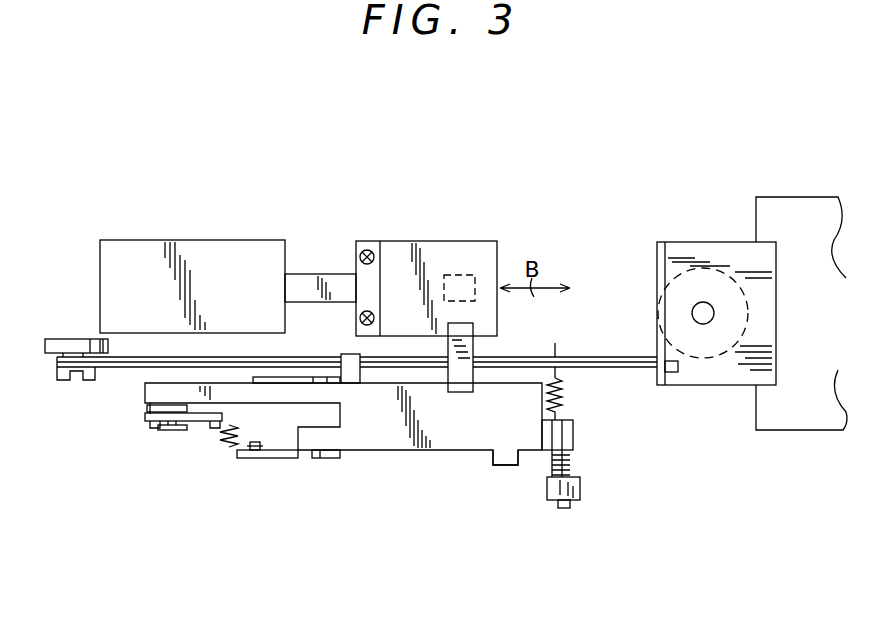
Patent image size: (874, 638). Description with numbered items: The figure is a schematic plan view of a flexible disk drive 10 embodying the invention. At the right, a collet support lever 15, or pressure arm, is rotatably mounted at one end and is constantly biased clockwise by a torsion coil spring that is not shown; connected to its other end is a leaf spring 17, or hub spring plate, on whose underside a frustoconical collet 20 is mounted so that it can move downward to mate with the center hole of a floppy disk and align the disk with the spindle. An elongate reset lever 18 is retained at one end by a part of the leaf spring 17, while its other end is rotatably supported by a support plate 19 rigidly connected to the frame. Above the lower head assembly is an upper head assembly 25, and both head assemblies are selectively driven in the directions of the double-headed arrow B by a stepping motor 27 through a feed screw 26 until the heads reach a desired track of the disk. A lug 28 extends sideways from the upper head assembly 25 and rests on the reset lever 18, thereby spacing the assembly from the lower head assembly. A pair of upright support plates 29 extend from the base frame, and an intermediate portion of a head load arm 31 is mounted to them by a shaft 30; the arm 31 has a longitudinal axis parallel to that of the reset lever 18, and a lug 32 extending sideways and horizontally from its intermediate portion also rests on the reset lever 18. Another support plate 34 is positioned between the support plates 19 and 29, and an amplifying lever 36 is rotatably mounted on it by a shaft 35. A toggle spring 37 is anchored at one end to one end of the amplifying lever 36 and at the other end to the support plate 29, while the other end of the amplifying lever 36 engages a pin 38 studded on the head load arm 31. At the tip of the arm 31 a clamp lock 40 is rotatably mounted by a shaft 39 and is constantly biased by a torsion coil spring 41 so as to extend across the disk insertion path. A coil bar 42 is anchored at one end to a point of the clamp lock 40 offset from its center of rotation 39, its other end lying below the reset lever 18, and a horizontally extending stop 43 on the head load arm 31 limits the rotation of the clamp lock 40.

The flexible disk drive 10 is at (616, 148).
The collet support lever 15 is at (800, 206).
The leaf spring 17 is at (706, 254).
The reset lever 18 is at (515, 357).
The support plate 19 is at (62, 346).
The collet 20 is at (662, 297).
The upper head assembly 25 is at (450, 258).
The feed screw 26 is at (331, 282).
The stepping motor 27 is at (205, 256).
The lug 28 is at (459, 395).
The support plates 29 is at (277, 379).
The shaft 30 is at (318, 458).
The head load arm 31 is at (395, 438).
The lug 32 is at (350, 357).
The support plate 34 is at (165, 430).
The shaft 35 is at (178, 431).
The amplifying lever 36 is at (196, 420).
The toggle spring 37 is at (230, 449).
The pin 38 is at (148, 408).
The shaft 39 is at (564, 509).
The clamp lock 40 is at (581, 490).
The torsion coil spring 41 is at (571, 466).
The coil bar 42 is at (564, 398).
The stop 43 is at (505, 463).